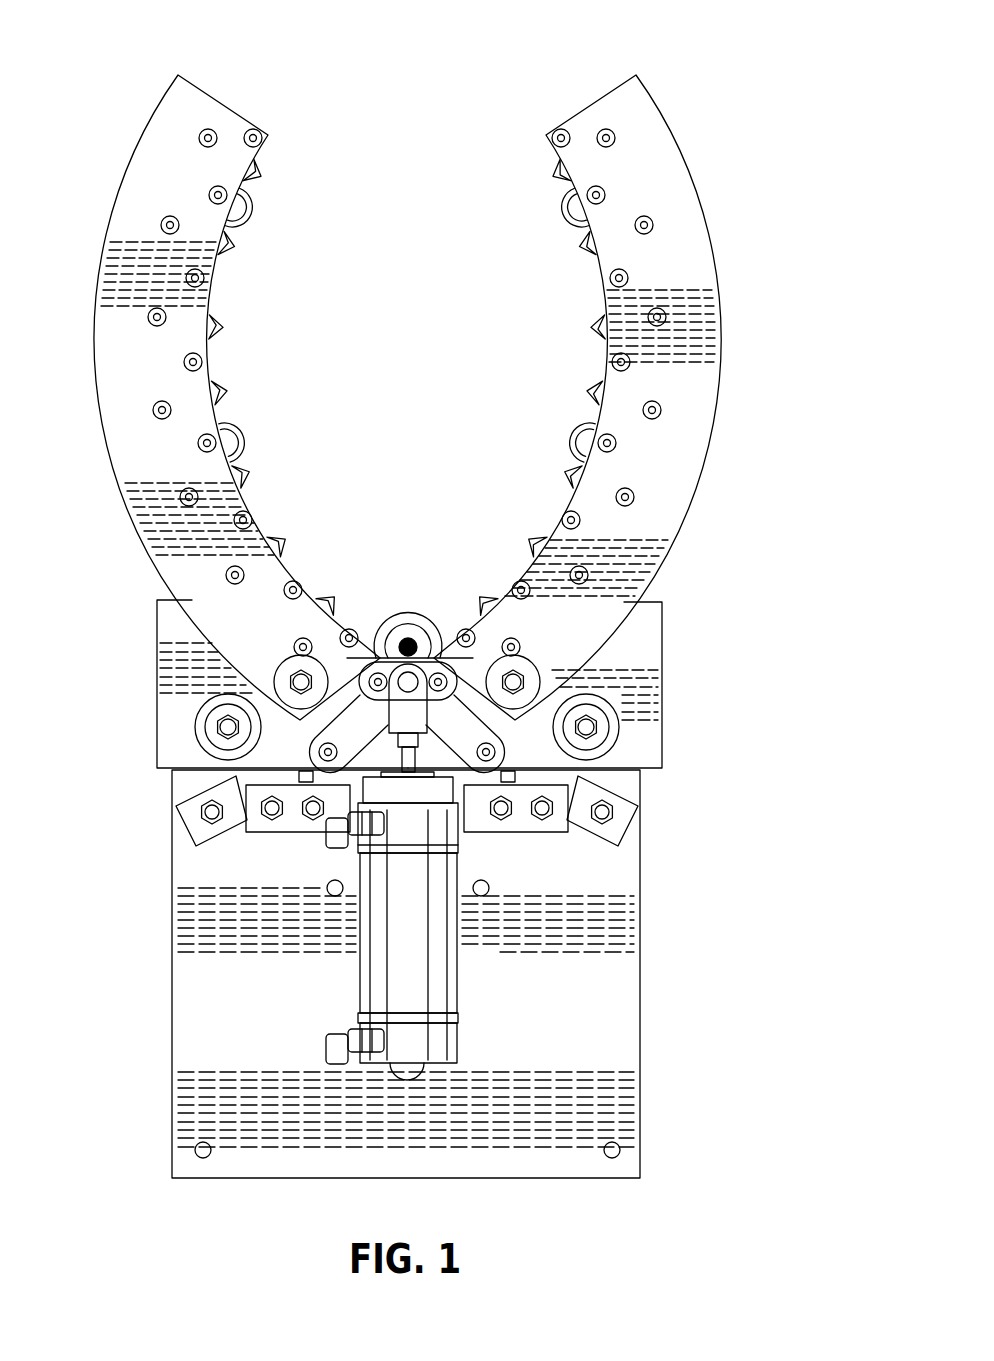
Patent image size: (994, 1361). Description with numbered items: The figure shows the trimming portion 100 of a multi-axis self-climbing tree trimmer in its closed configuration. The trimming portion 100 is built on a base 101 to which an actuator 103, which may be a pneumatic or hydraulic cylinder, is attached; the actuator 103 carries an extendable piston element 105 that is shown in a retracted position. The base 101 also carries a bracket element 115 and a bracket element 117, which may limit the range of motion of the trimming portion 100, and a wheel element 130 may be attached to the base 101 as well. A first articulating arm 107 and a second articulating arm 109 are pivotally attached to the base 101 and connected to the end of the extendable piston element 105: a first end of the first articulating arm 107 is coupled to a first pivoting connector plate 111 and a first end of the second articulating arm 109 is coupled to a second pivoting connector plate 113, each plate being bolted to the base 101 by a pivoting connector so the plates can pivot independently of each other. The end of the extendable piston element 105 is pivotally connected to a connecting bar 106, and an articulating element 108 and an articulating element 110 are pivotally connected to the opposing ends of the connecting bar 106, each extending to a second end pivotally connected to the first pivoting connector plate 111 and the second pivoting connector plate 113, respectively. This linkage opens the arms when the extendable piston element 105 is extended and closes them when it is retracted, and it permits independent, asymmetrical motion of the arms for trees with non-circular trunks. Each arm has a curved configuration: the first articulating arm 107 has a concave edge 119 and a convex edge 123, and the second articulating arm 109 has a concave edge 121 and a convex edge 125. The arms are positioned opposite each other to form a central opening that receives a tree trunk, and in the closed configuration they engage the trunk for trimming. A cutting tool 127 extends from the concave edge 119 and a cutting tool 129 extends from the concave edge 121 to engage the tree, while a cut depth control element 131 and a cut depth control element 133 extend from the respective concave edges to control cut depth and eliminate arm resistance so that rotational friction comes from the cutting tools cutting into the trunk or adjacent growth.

The trimming portion 100 is at (742, 100).
The base 101 is at (630, 1060).
The actuator 103 is at (372, 992).
The extendable piston element 105 is at (402, 760).
The connecting bar 106 is at (380, 620).
The first articulating arm 107 is at (700, 445).
The articulating element 108 is at (514, 722).
The second articulating arm 109 is at (113, 445).
The articulating element 110 is at (300, 722).
The first pivoting connector plate 111 is at (655, 632).
The second pivoting connector plate 113 is at (160, 618).
The bracket element 115 is at (625, 820).
The bracket element 117 is at (185, 815).
The concave edge 119 is at (604, 373).
The concave edge 121 is at (210, 373).
The convex edge 123 is at (710, 236).
The convex edge 125 is at (115, 208).
The cutting tool 127 is at (555, 165).
The cutting tool 129 is at (260, 162).
The wheel element 130 is at (428, 614).
The cut depth control element 131 is at (566, 214).
The cut depth control element 133 is at (248, 214).